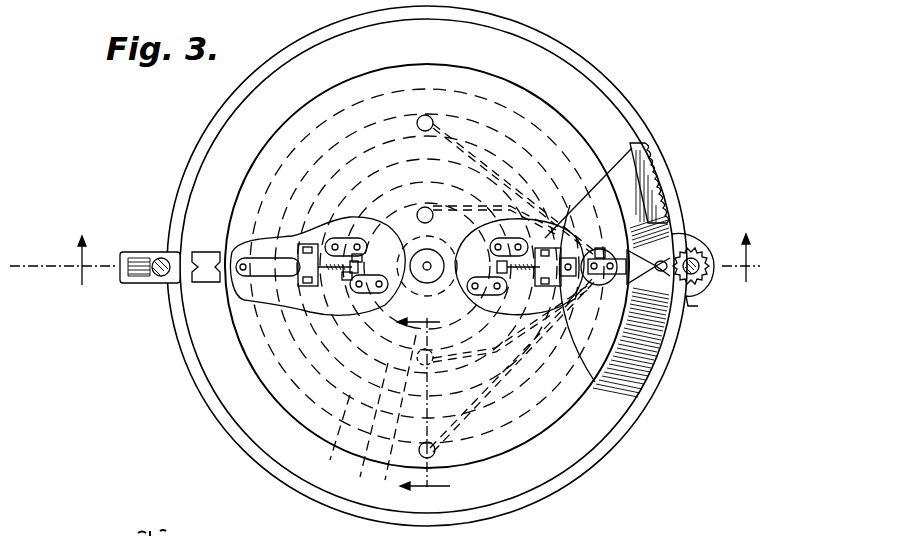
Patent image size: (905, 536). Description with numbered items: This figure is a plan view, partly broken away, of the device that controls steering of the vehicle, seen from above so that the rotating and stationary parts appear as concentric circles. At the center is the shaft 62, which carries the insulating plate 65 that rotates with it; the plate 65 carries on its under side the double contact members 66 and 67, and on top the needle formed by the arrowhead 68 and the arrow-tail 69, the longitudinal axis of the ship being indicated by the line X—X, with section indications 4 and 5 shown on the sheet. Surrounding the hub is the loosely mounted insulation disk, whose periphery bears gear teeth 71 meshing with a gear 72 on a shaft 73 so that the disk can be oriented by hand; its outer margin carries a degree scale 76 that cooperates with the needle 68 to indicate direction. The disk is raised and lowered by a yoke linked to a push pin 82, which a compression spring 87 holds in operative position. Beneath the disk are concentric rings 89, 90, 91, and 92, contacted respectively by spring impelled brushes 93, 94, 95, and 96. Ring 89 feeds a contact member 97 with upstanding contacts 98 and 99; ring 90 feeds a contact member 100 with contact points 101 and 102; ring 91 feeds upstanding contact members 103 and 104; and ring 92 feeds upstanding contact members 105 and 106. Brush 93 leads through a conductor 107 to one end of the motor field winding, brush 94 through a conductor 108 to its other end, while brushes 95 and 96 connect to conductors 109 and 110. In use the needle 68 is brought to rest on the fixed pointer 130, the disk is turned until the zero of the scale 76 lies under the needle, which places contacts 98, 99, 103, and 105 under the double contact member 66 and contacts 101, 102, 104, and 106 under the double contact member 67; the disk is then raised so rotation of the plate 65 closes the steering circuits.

The section line X-X 4 is at (405, 259).
The section line 5- 5 is at (431, 404).
The shaft 62 is at (428, 260).
The plate 65 is at (662, 200).
The double contact member 66 is at (338, 283).
The double contact member 67 is at (521, 277).
The arrowhead 68 is at (678, 238).
The arrow-tail 69 is at (207, 252).
The gear teeth 71 is at (672, 212).
The gear 72 is at (697, 306).
The shaft 73 is at (708, 278).
The degree scale 76 is at (655, 360).
The push pin 82 is at (160, 277).
The compression spring 87 is at (138, 278).
The concentric ring 89 is at (299, 412).
The concentric ring 90 is at (357, 407).
The concentric ring 91 is at (361, 420).
The concentric ring 92 is at (360, 444).
The spring impelled brush 93 is at (438, 454).
The spring impelled brush 94 is at (435, 122).
The spring impelled brush 95 is at (432, 362).
The spring impelled brush 96 is at (430, 208).
The contact member 97 is at (264, 270).
The upstanding contact 98 is at (345, 238).
The upstanding contact 99 is at (290, 302).
The contact member 100 is at (572, 244).
The contact point 101 is at (590, 193).
The contact point 102 is at (590, 298).
The upstanding contact member 103 is at (372, 236).
The upstanding contact member 104 is at (508, 238).
The upstanding contact member 105 is at (427, 268).
The upstanding contact member 106 is at (468, 318).
The conductor 107 is at (498, 418).
The conductor 108 is at (488, 140).
The conductor 109 is at (476, 352).
The conductor 110 is at (466, 206).
The fixed pointer 130 is at (664, 300).